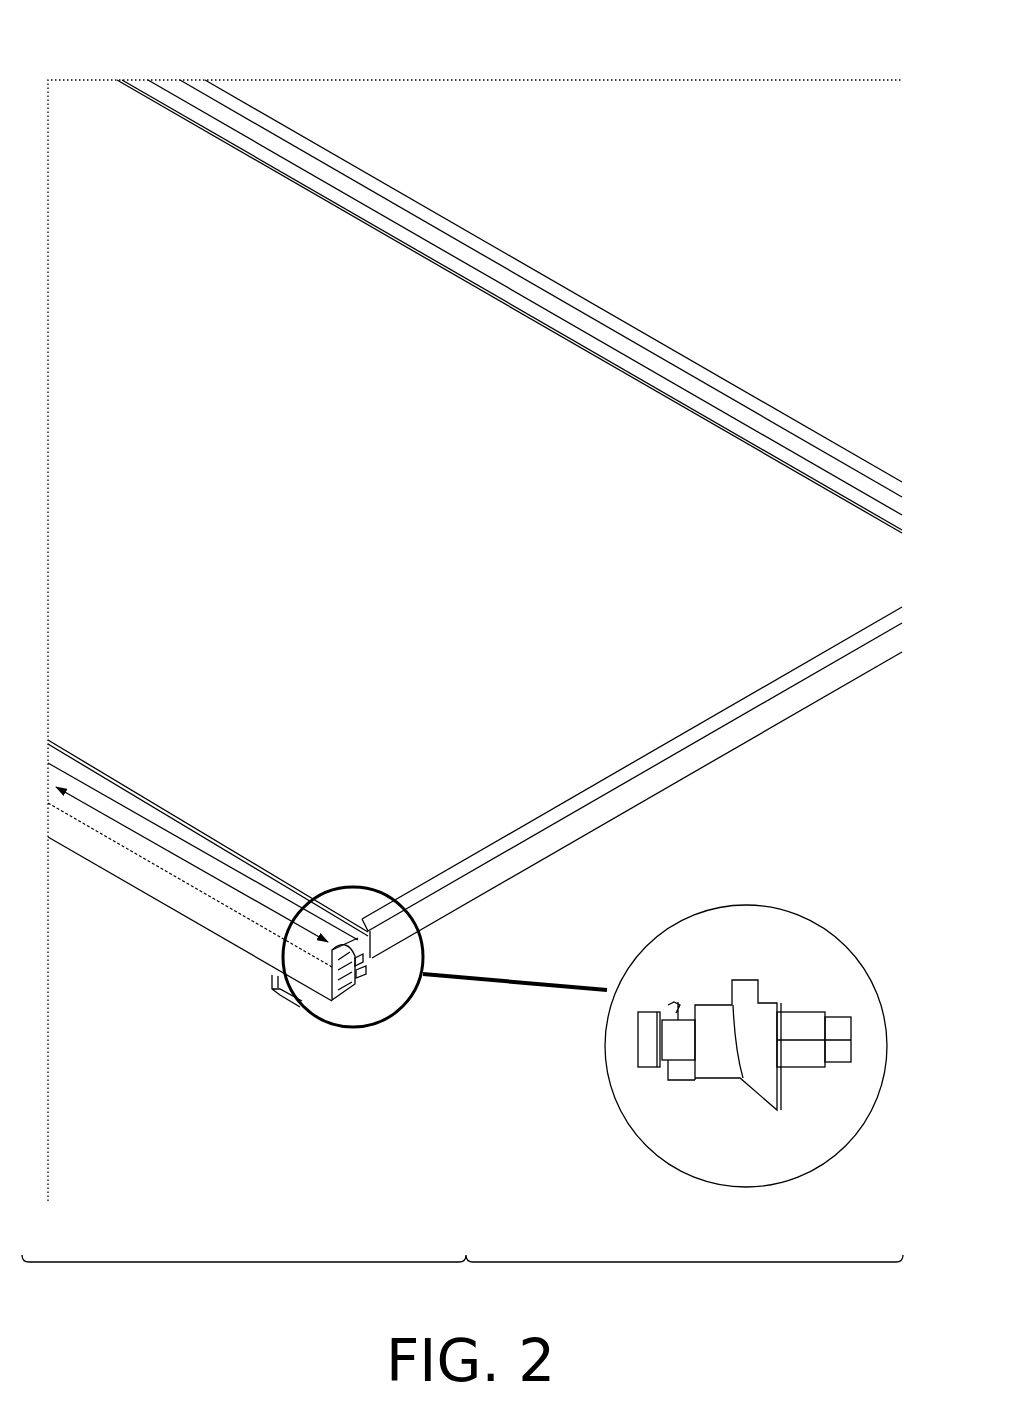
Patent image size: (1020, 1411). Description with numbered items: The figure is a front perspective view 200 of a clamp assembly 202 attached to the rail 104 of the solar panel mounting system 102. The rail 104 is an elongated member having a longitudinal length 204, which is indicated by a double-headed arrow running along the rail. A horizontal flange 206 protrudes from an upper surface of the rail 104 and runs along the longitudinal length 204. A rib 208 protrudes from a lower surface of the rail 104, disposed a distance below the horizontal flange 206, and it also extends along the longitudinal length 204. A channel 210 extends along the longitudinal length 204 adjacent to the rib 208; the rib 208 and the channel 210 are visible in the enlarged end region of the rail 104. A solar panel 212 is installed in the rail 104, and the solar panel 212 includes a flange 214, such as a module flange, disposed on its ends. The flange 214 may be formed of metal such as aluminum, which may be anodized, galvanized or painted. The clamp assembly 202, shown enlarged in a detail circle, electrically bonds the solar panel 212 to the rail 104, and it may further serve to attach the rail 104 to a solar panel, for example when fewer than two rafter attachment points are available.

The solar panel mounting system 102 is at (124, 50).
The rail 104 is at (225, 943).
The front perspective view 200 is at (462, 1274).
The clamp assembly 202 is at (749, 930).
The longitudinal length 204 is at (180, 858).
The horizontal flange 206 is at (218, 838).
The rib 208 is at (360, 964).
The channel 210 is at (366, 975).
The solar panel 212 is at (387, 591).
The flange 214 is at (517, 868).